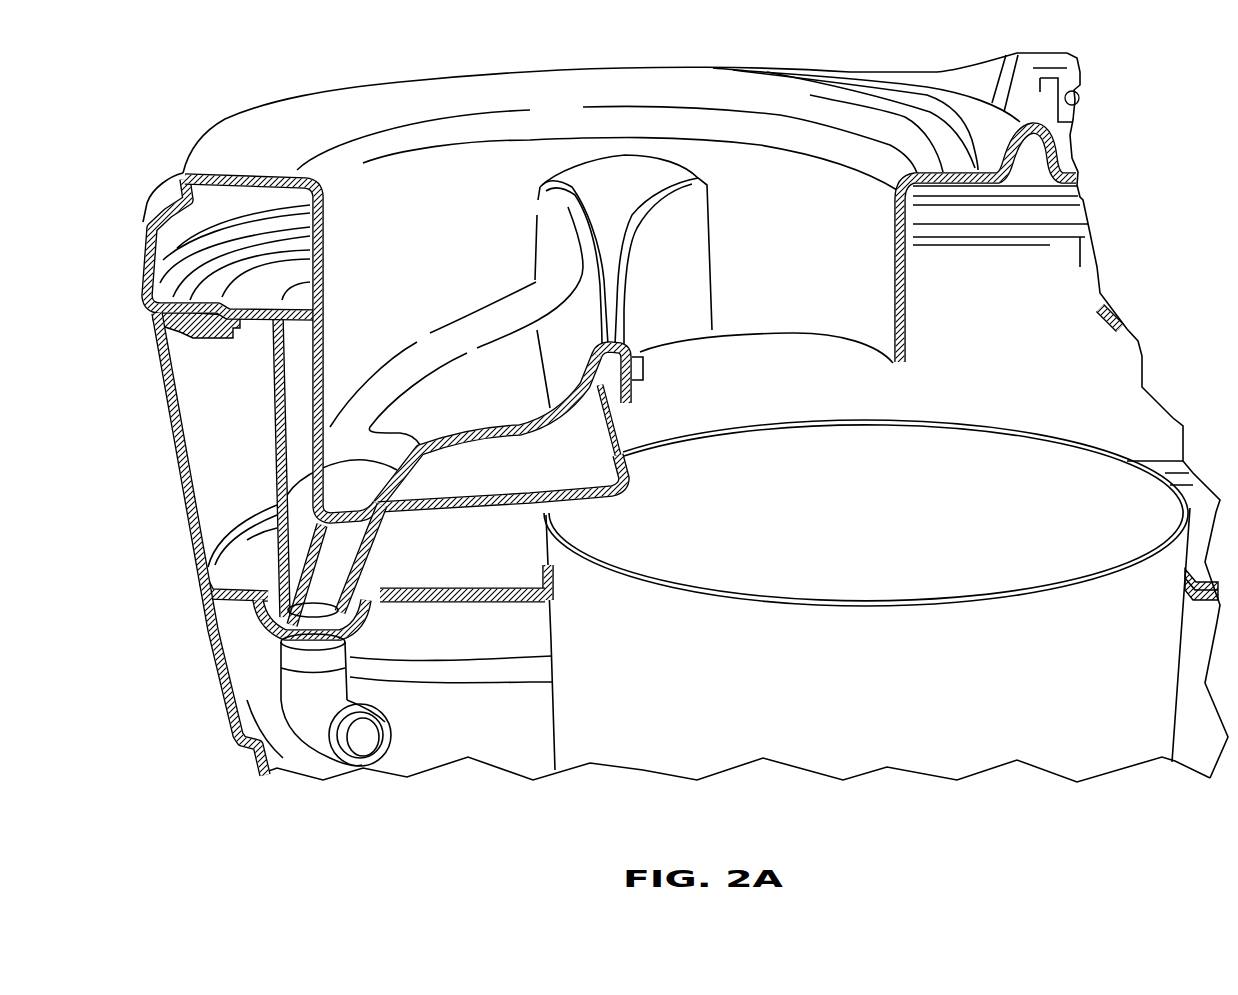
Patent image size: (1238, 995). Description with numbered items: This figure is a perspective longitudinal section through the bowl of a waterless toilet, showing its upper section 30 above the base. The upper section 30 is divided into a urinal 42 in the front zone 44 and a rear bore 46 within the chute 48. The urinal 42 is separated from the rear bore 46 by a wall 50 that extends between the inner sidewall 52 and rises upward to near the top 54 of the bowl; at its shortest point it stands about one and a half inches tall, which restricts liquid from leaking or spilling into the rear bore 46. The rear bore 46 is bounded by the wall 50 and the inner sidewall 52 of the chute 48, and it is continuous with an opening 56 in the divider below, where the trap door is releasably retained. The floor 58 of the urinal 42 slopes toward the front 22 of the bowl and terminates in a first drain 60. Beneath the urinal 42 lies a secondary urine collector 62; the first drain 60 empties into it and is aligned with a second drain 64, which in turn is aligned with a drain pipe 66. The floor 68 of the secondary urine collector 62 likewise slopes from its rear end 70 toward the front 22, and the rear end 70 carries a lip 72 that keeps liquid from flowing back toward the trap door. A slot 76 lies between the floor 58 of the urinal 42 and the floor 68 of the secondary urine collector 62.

The front 22 is at (148, 241).
The upper section 30 is at (736, 165).
The urinal 42 is at (440, 287).
The front zone 44 is at (425, 122).
The rear bore 46 is at (785, 234).
The chute 48 is at (863, 192).
The wall 50 is at (578, 180).
The inner sidewall 52 is at (600, 147).
The top 54 is at (654, 78).
The opening 56 is at (795, 337).
The floor 58 is at (503, 377).
The first drain 60 is at (347, 507).
The secondary urine collector 62 is at (487, 467).
The second drain 64 is at (315, 610).
The drain pipe 66 is at (290, 677).
The floor 68 is at (460, 500).
The rear end 70 is at (613, 466).
The lip 72 is at (620, 438).
The slot 76 is at (618, 416).